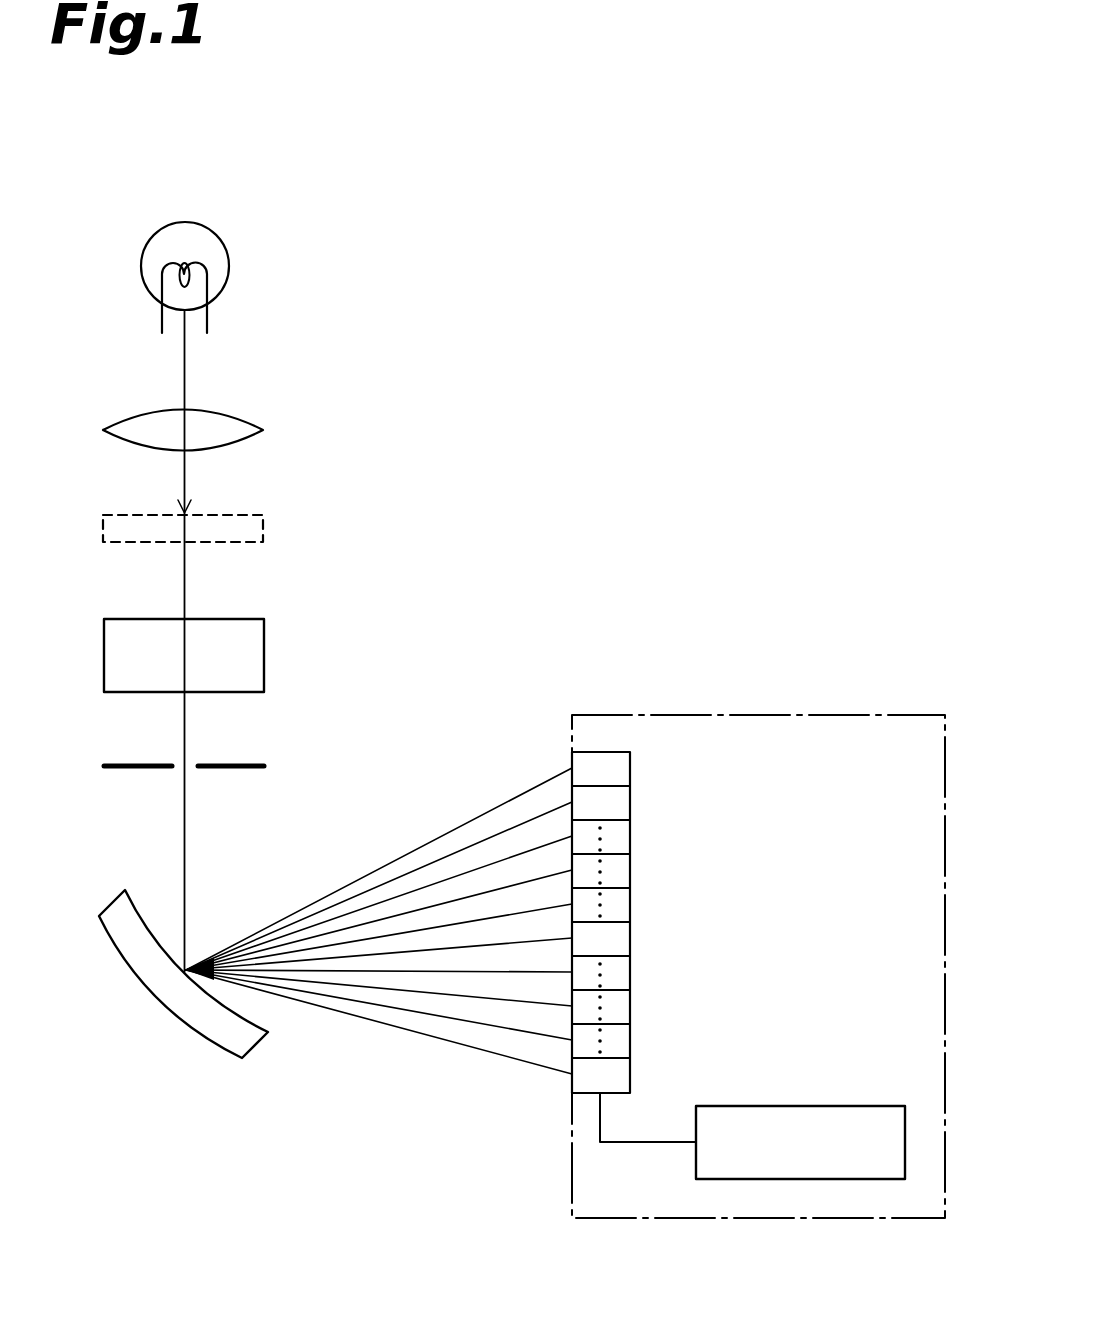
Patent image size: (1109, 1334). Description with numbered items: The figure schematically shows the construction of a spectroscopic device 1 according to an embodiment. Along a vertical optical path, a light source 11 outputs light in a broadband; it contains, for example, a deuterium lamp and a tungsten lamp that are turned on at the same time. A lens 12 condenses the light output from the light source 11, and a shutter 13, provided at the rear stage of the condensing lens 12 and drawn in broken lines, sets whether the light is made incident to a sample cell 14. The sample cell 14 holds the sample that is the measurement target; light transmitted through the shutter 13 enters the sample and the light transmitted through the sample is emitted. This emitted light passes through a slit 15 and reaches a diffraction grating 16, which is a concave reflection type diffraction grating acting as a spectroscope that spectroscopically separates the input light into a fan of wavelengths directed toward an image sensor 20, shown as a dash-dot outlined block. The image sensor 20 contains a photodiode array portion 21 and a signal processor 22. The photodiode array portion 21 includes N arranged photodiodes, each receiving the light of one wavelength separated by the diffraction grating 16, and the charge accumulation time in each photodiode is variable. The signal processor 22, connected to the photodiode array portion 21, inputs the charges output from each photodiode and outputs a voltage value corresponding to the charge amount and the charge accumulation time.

The spectroscopic device 1 is at (758, 308).
The light source 11 is at (229, 262).
The lens 12 is at (263, 430).
The shutter 13 is at (263, 528).
The sample cell 14 is at (264, 651).
The slit 15 is at (248, 765).
The diffraction grating 16 is at (203, 1021).
The image sensor 20 is at (903, 712).
The photodiode array portion 21 is at (630, 866).
The signal processor 22 is at (838, 1106).